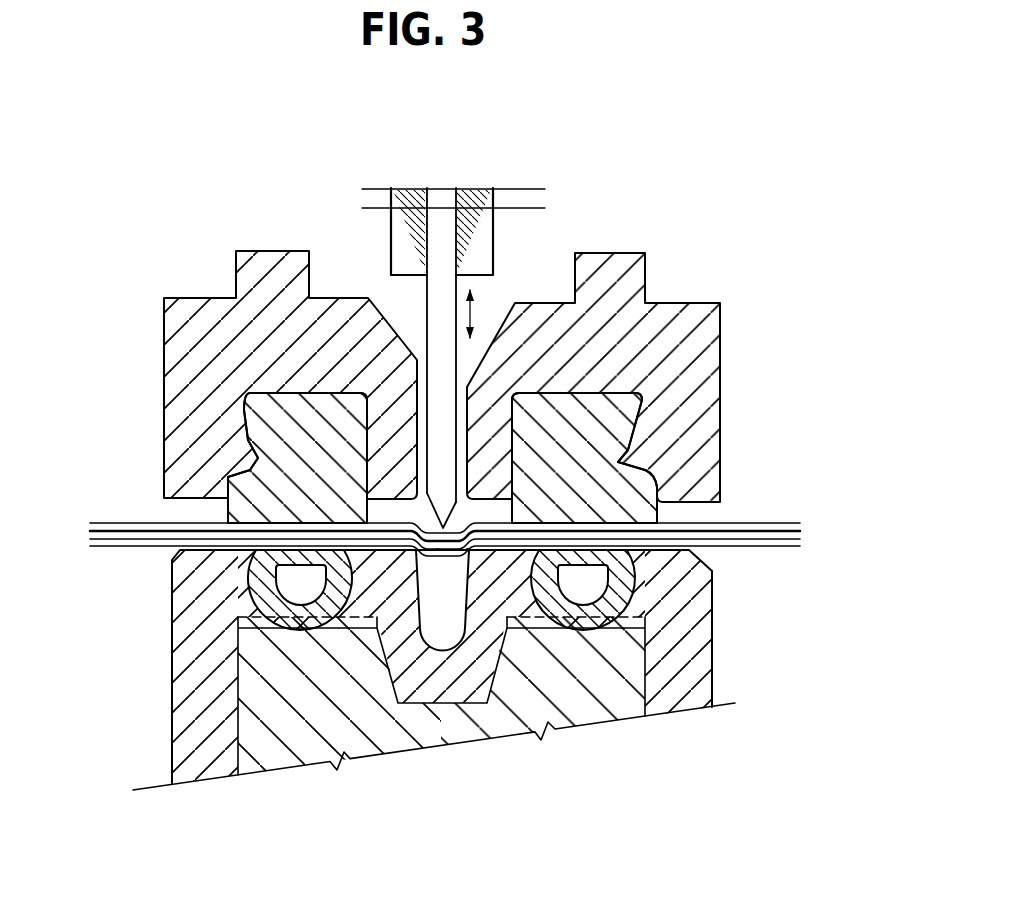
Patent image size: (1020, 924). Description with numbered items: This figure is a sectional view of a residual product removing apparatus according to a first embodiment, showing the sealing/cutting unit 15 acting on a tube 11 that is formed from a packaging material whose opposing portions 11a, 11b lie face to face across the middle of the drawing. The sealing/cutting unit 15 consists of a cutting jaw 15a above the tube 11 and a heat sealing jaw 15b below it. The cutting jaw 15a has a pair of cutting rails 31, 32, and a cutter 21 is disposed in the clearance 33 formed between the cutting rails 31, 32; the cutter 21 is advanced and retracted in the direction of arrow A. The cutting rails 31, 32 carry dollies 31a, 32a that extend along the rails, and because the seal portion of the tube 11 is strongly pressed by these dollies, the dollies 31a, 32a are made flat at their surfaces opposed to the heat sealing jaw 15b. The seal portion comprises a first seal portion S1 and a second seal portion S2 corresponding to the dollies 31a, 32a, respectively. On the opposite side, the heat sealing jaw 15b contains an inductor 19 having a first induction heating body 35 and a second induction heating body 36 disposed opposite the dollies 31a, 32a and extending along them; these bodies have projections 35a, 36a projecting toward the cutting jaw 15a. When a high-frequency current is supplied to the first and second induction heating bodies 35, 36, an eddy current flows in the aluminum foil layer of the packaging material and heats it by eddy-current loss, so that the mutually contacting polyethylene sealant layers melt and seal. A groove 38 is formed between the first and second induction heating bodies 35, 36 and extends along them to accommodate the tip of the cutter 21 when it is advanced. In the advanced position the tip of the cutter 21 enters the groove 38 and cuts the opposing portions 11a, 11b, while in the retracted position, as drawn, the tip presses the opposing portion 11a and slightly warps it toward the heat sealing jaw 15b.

The tube 11 is at (724, 520).
The opposing portion of the packaging material 11a is at (135, 522).
The opposing portion of the packaging material 11b is at (115, 550).
The sealing/cutting unit 15 is at (742, 408).
The cutting jaw 15a is at (633, 242).
The heat sealing jaw 15b is at (714, 724).
The inductor 19 is at (156, 617).
The cutter 21 is at (440, 220).
The cutting rail 31 is at (204, 328).
The dolly 31a is at (256, 412).
The cutting rail 32 is at (535, 326).
The dolly 32a is at (610, 407).
The clearance 33 is at (415, 357).
The first induction heating body 35 is at (286, 616).
The projection 35a is at (307, 548).
The second induction heating body 36 is at (562, 614).
The projection 36a is at (567, 553).
The groove 38 is at (438, 635).
The first seal portion S1 is at (306, 514).
The second seal portion S2 is at (586, 513).
The direction of arrow A is at (485, 314).